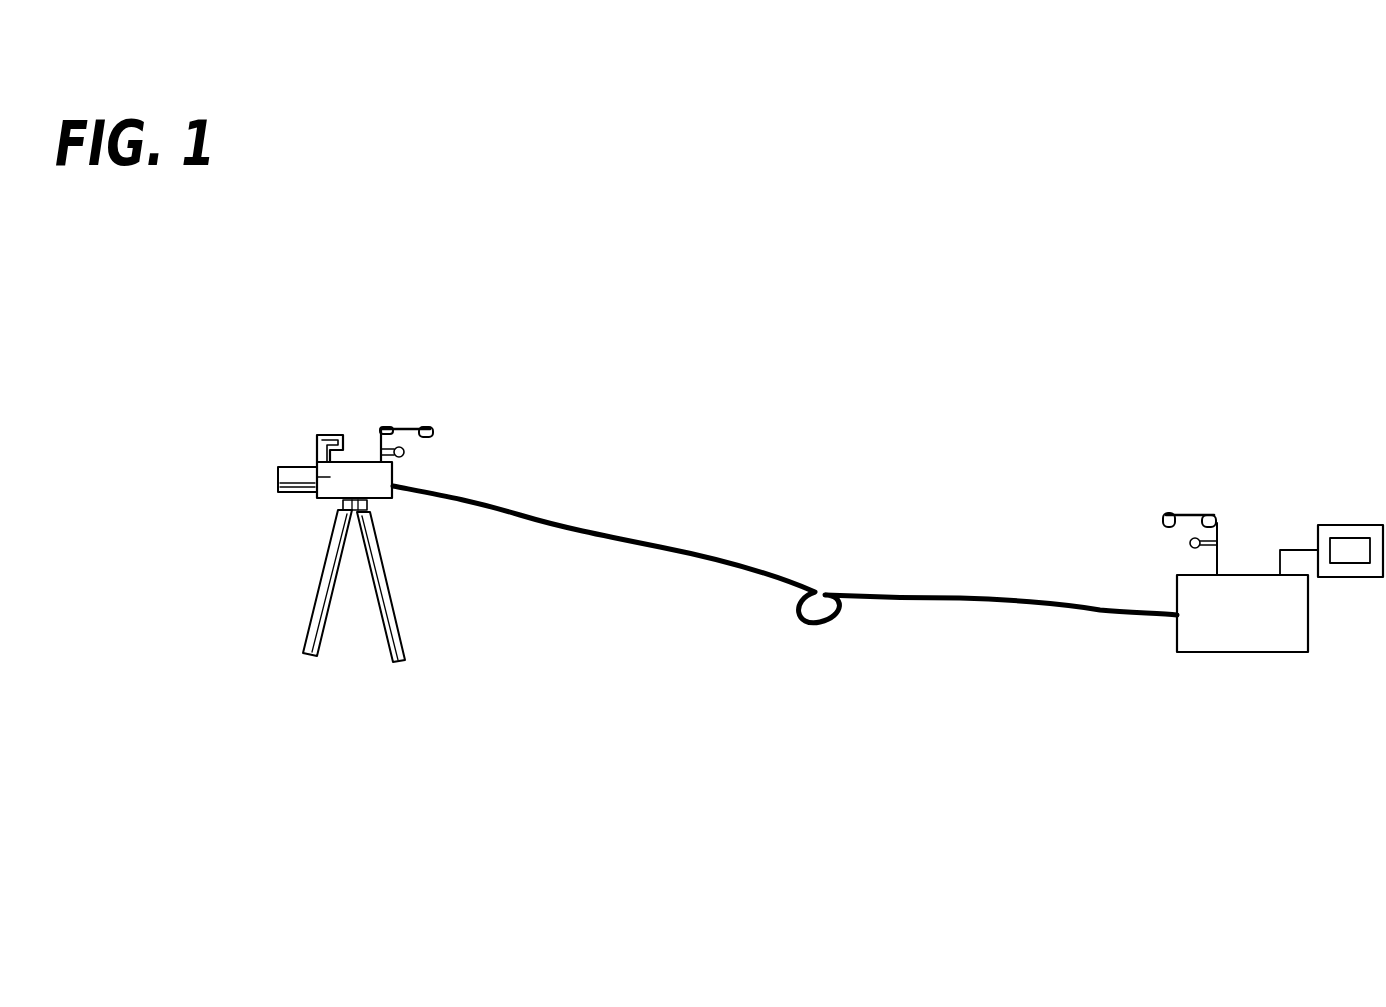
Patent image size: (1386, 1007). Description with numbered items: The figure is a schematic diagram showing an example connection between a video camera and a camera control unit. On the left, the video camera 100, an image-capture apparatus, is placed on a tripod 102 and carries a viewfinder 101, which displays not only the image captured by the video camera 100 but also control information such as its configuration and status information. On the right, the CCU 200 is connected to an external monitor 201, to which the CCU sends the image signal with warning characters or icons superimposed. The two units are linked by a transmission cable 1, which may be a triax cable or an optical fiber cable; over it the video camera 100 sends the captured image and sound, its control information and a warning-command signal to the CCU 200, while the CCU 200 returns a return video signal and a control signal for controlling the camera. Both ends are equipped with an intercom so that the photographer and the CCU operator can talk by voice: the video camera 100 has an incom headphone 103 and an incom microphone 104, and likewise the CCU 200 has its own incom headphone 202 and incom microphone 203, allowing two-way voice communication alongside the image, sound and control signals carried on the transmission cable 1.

The transmission cable 1 is at (797, 577).
The video camera 100 is at (367, 737).
The viewfinder 101 is at (340, 437).
The tripod 102 is at (392, 587).
The incom headphone 103 is at (433, 431).
The incom microphone 104 is at (405, 452).
The CCU 200 is at (1237, 736).
The external monitor 201 is at (1350, 525).
The incom headphone 202 is at (1203, 512).
The incom microphone 203 is at (1190, 545).